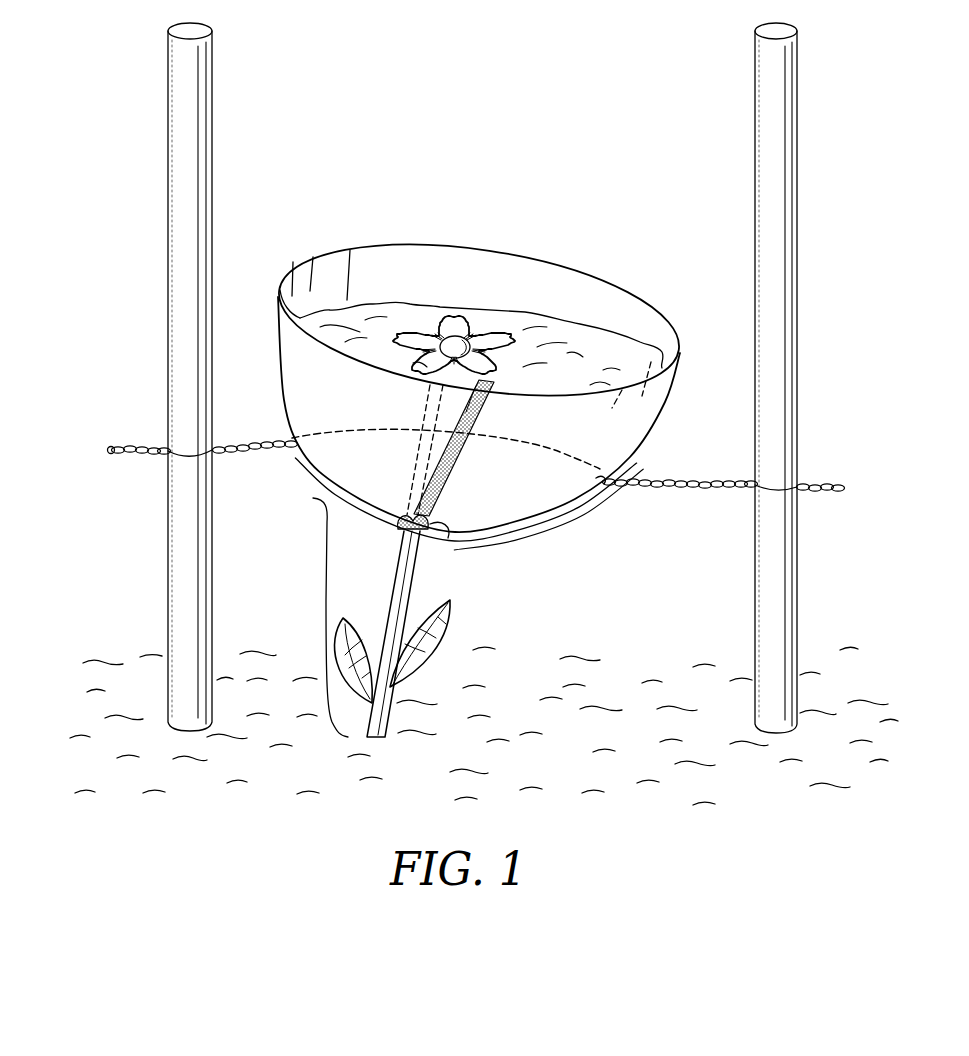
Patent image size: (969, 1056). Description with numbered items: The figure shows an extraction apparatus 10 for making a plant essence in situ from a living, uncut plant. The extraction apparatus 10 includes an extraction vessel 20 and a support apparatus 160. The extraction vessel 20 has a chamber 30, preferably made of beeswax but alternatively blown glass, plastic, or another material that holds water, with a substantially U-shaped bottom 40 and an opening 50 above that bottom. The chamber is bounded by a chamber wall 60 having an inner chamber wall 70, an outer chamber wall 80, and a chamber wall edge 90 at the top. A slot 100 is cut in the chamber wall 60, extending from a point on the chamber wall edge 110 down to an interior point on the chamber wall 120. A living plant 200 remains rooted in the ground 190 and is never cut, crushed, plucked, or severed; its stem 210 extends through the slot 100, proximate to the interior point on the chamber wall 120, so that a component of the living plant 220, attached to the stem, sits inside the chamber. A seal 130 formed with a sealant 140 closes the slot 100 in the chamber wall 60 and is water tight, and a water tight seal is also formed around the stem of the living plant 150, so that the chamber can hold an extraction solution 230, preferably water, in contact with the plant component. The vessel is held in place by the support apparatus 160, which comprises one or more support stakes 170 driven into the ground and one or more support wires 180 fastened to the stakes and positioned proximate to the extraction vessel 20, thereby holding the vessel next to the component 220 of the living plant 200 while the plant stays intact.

The extraction apparatus 10 is at (385, 182).
The extraction vessel 20 is at (473, 268).
The chamber 30 is at (497, 282).
The substantially U-shaped bottom 40 is at (503, 537).
The opening 50 is at (378, 246).
The chamber wall 60 is at (588, 486).
The inner chamber wall 70 is at (535, 292).
The outer chamber wall 80 is at (555, 515).
The chamber wall edge 90 is at (647, 318).
The slot 100 is at (490, 386).
The point on the chamber wall edge 110 is at (490, 392).
The interior point on the chamber wall 120 is at (402, 528).
The seal 130 is at (453, 477).
The sealant 140 is at (452, 457).
The water tight seal around the stem of the living plant 150 is at (436, 529).
The support apparatus 160 is at (84, 320).
The support stake 170 is at (213, 60).
The support wire 180 is at (113, 452).
The ground 190 is at (580, 658).
The living plant 200 is at (313, 498).
The stem of the living plant 210 is at (394, 594).
The component of the living plant 220 is at (433, 317).
The extraction solution 230 is at (592, 355).